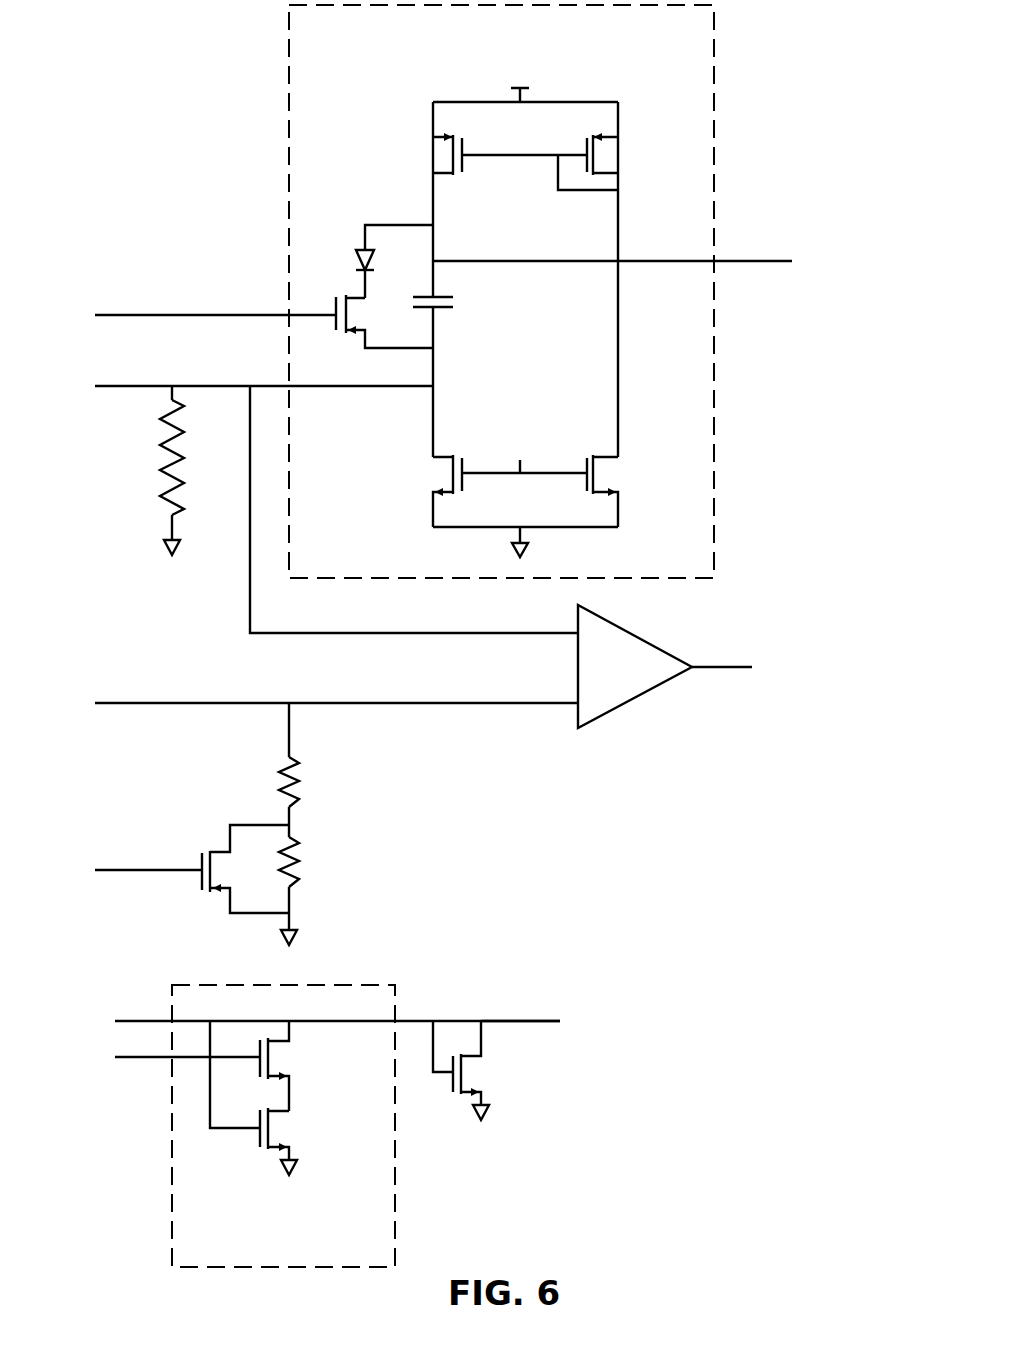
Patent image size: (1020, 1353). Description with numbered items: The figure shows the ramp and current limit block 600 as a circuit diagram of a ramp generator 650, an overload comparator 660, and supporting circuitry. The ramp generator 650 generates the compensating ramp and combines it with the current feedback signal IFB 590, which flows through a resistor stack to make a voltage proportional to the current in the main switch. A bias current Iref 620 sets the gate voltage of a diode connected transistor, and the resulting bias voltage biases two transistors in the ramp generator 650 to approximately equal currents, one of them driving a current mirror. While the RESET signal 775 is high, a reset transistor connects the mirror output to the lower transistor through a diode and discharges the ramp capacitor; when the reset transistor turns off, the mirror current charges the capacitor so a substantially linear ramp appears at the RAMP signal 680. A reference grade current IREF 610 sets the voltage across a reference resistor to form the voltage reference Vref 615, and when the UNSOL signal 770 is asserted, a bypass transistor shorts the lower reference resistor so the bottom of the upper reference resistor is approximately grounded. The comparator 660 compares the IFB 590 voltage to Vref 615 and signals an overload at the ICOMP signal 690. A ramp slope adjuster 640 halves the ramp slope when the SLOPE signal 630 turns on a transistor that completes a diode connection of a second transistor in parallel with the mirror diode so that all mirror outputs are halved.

The ramp and current limit block 600 is at (156, 54).
The ramp generator 650 is at (437, 76).
The RAMP signal 680 is at (761, 260).
The RESET signal 775 is at (124, 314).
The current feedback signal IFB 590 is at (124, 385).
The reference current IREF 610 is at (132, 702).
The voltage reference Vref 615 is at (518, 705).
The overload comparator 660 is at (638, 696).
The ICOMP signal 690 is at (721, 666).
The UNSOL signal 770 is at (114, 869).
The bias current Iref 620 is at (132, 1020).
The SLOPE signal 630 is at (130, 1059).
The ramp slope adjuster 640 is at (396, 1213).